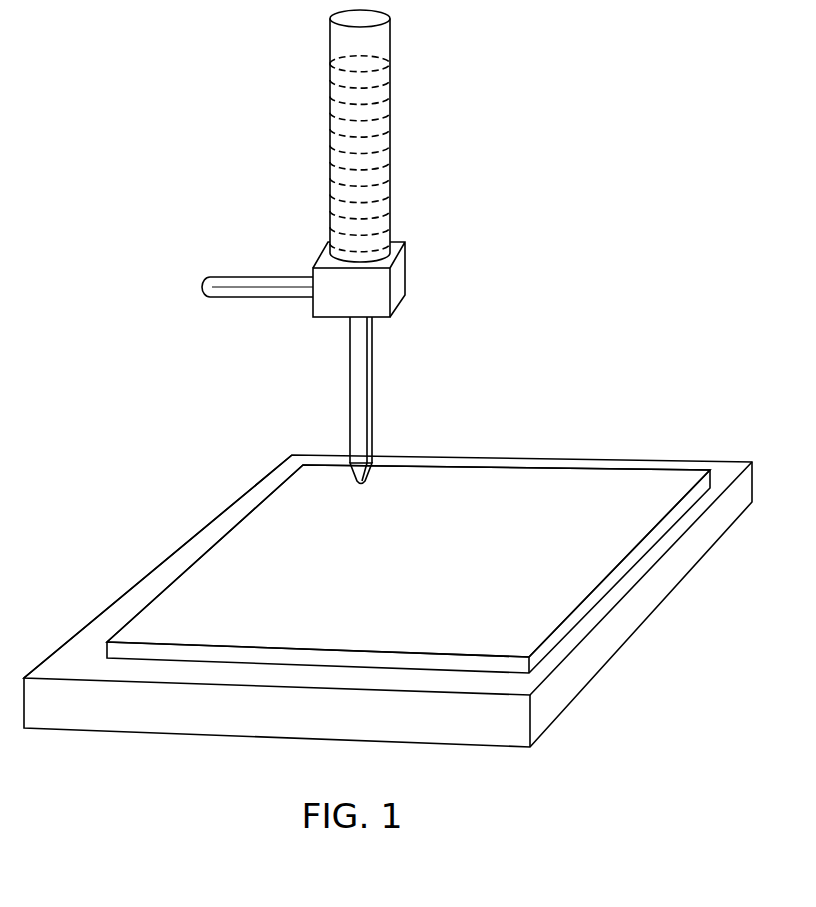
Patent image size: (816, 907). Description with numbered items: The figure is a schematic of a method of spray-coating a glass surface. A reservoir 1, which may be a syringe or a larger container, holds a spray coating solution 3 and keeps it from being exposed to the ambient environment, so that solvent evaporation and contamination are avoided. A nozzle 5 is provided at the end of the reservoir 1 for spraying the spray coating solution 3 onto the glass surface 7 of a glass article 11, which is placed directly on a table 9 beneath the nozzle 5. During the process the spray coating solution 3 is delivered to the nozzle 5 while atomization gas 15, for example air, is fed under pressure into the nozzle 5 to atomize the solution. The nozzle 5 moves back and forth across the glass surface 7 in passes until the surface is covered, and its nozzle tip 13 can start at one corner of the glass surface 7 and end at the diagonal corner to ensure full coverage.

The reservoir 1 is at (330, 60).
The spray coating solution 3 is at (335, 123).
The nozzle 5 is at (375, 381).
The glass surface 7 is at (560, 483).
The table 9 is at (732, 470).
The glass article 11 is at (665, 470).
The nozzle tip 13 is at (362, 487).
The atomization gas 15 is at (200, 290).